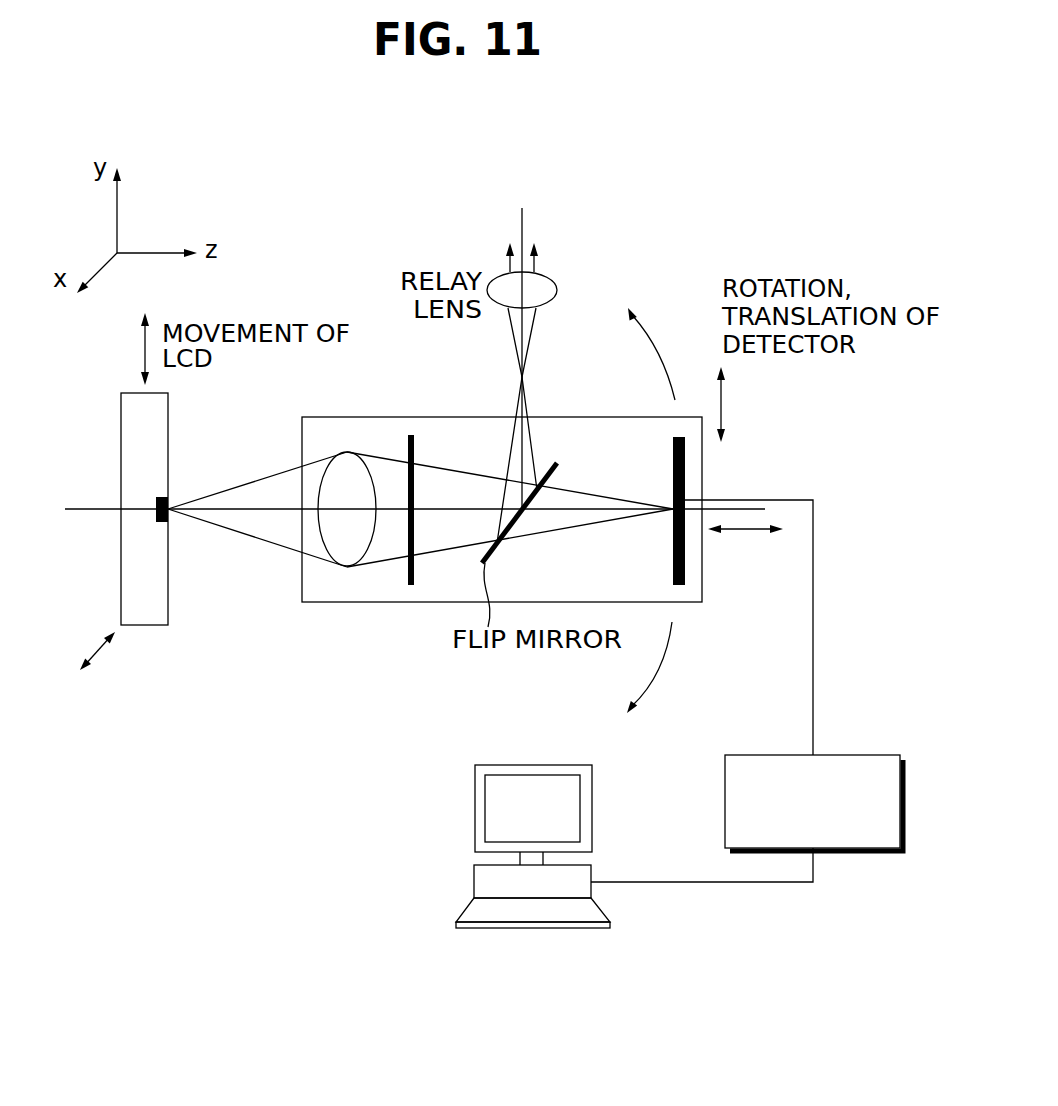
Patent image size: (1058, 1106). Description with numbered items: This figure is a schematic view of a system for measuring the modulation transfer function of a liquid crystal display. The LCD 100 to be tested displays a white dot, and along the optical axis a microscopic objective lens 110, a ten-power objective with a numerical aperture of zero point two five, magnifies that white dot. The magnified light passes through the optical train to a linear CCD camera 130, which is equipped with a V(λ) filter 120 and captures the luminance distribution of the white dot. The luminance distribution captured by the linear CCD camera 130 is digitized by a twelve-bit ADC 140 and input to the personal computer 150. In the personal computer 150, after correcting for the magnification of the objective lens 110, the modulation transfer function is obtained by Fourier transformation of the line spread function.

The LCD 100 is at (155, 618).
The microscopic objective lens 110 is at (338, 577).
The V(λ) filter 120 is at (678, 585).
The linear CCD camera 130 is at (410, 585).
The ADC 140 is at (853, 755).
The personal computer 150 is at (475, 803).